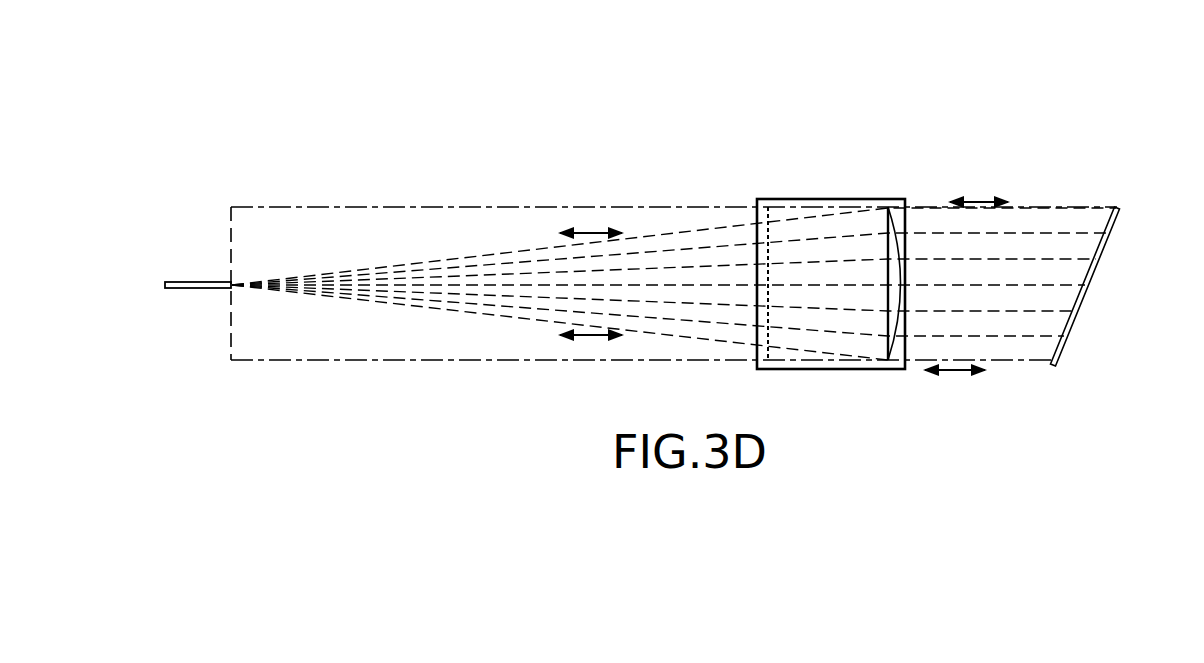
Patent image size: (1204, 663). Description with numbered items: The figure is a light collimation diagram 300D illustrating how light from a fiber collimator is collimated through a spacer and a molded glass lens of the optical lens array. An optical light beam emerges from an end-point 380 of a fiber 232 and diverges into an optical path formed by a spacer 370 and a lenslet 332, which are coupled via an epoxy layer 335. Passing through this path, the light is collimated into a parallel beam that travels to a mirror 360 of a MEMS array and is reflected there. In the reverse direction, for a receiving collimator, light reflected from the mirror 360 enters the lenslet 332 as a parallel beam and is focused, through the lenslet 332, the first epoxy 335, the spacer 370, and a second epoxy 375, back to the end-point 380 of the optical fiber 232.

The light collimation diagram 300D is at (258, 142).
The fiber 232 is at (166, 281).
The end-point 380 is at (228, 290).
The spacer 370 is at (437, 206).
The second epoxy 375 is at (232, 346).
The epoxy layer 335 is at (769, 214).
The lenslet 332 is at (890, 201).
The mirror 360 is at (1090, 298).